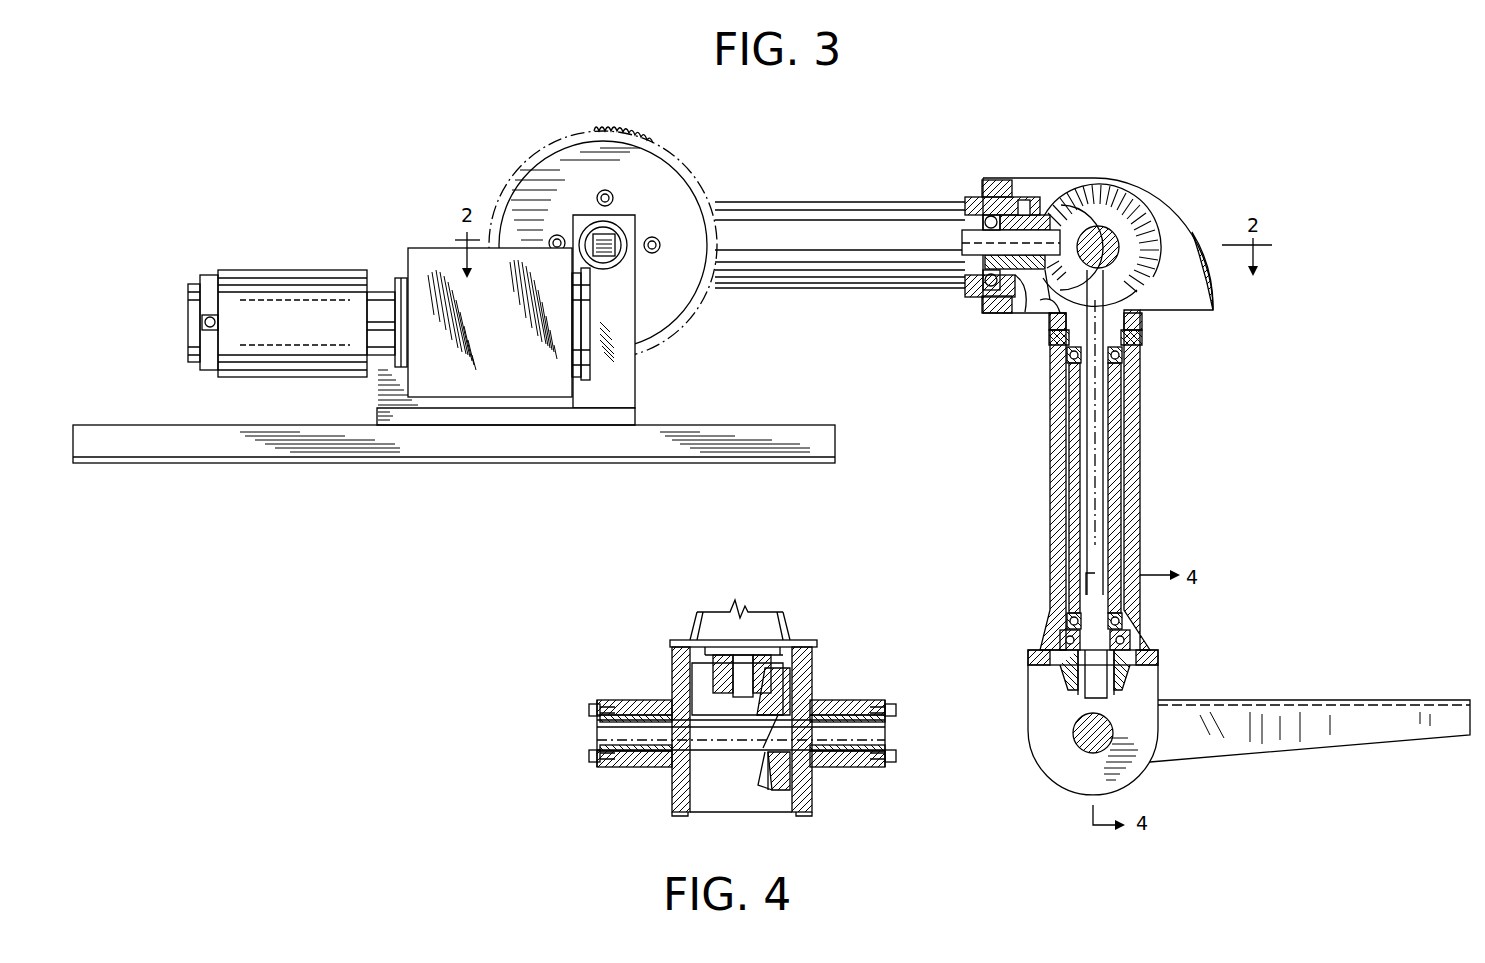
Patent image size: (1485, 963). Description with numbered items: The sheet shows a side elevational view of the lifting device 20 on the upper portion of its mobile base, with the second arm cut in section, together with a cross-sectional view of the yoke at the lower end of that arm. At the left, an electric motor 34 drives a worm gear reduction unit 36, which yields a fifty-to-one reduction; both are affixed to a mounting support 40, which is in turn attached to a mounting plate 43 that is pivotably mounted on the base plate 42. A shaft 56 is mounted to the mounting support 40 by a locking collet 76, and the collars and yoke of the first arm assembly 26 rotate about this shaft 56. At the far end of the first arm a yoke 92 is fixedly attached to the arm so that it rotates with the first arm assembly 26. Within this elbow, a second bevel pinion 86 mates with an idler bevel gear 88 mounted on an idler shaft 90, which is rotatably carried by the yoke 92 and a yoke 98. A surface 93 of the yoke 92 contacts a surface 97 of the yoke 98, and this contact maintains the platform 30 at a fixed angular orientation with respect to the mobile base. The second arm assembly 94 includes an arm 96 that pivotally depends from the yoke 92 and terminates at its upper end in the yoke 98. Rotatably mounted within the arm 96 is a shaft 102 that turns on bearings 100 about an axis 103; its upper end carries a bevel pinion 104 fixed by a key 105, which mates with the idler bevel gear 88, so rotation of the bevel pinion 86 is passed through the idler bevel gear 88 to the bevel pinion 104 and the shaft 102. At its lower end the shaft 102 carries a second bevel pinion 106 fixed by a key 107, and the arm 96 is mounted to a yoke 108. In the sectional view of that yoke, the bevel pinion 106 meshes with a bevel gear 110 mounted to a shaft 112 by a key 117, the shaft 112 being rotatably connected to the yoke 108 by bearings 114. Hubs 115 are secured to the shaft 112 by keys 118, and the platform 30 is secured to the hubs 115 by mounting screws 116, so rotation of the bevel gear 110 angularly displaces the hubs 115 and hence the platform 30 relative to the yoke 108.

In FIG. 3, the lifting device 20 is at (840, 229).
In FIG. 3, the first arm assembly 26 is at (845, 287).
In FIG. 3, the platform 30 is at (1333, 698).
In FIG. 4, the platform 30 is at (592, 760).
In FIG. 3, the electric motor 34 is at (278, 270).
In FIG. 3, the worm gear reduction unit 36 is at (444, 250).
In FIG. 3, the mounting support 40 is at (626, 311).
In FIG. 3, the base plate 42 is at (200, 452).
In FIG. 3, the mounting plate 43 is at (485, 420).
In FIG. 3, the shaft 56 is at (612, 252).
In FIG. 3, the locking collet 76 is at (613, 240).
In FIG. 3, the second bevel pinion 86 is at (1040, 210).
In FIG. 3, the idler bevel gear 88 is at (1140, 205).
In FIG. 3, the idler shaft 90 is at (1115, 255).
In FIG. 3, the yoke 92 is at (998, 177).
In FIG. 3, the surface 93 is at (1025, 300).
In FIG. 3, the second arm assembly 94 is at (1050, 478).
In FIG. 3, the arm 96 is at (1140, 522).
In FIG. 4, the arm 96 is at (700, 625).
In FIG. 3, the surface 97 is at (1048, 305).
In FIG. 3, the yoke 98 is at (1165, 297).
In FIG. 3, the bearings 100 is at (1130, 355).
In FIG. 3, the shaft 102 is at (1080, 408).
In FIG. 3, the axis 103 is at (1100, 452).
In FIG. 3, the bevel pinion 104 is at (1130, 315).
In FIG. 3, the key 105 is at (1065, 340).
In FIG. 3, the second bevel pinion 106 is at (1125, 645).
In FIG. 4, the second bevel pinion 106 is at (775, 645).
In FIG. 3, the key 107 is at (1070, 640).
In FIG. 4, the key 107 is at (725, 660).
In FIG. 3, the yoke 108 is at (1040, 698).
In FIG. 4, the yoke 108 is at (677, 683).
In FIG. 4, the bevel gear 110 is at (768, 785).
In FIG. 3, the shaft 112 is at (1085, 740).
In FIG. 4, the shaft 112 is at (632, 740).
In FIG. 4, the bearings 114 is at (810, 700).
In FIG. 4, the hubs 115 is at (648, 767).
In FIG. 4, the mounting screws 116 is at (588, 755).
In FIG. 4, the key 117 is at (780, 718).
In FIG. 4, the keys 118 is at (640, 715).